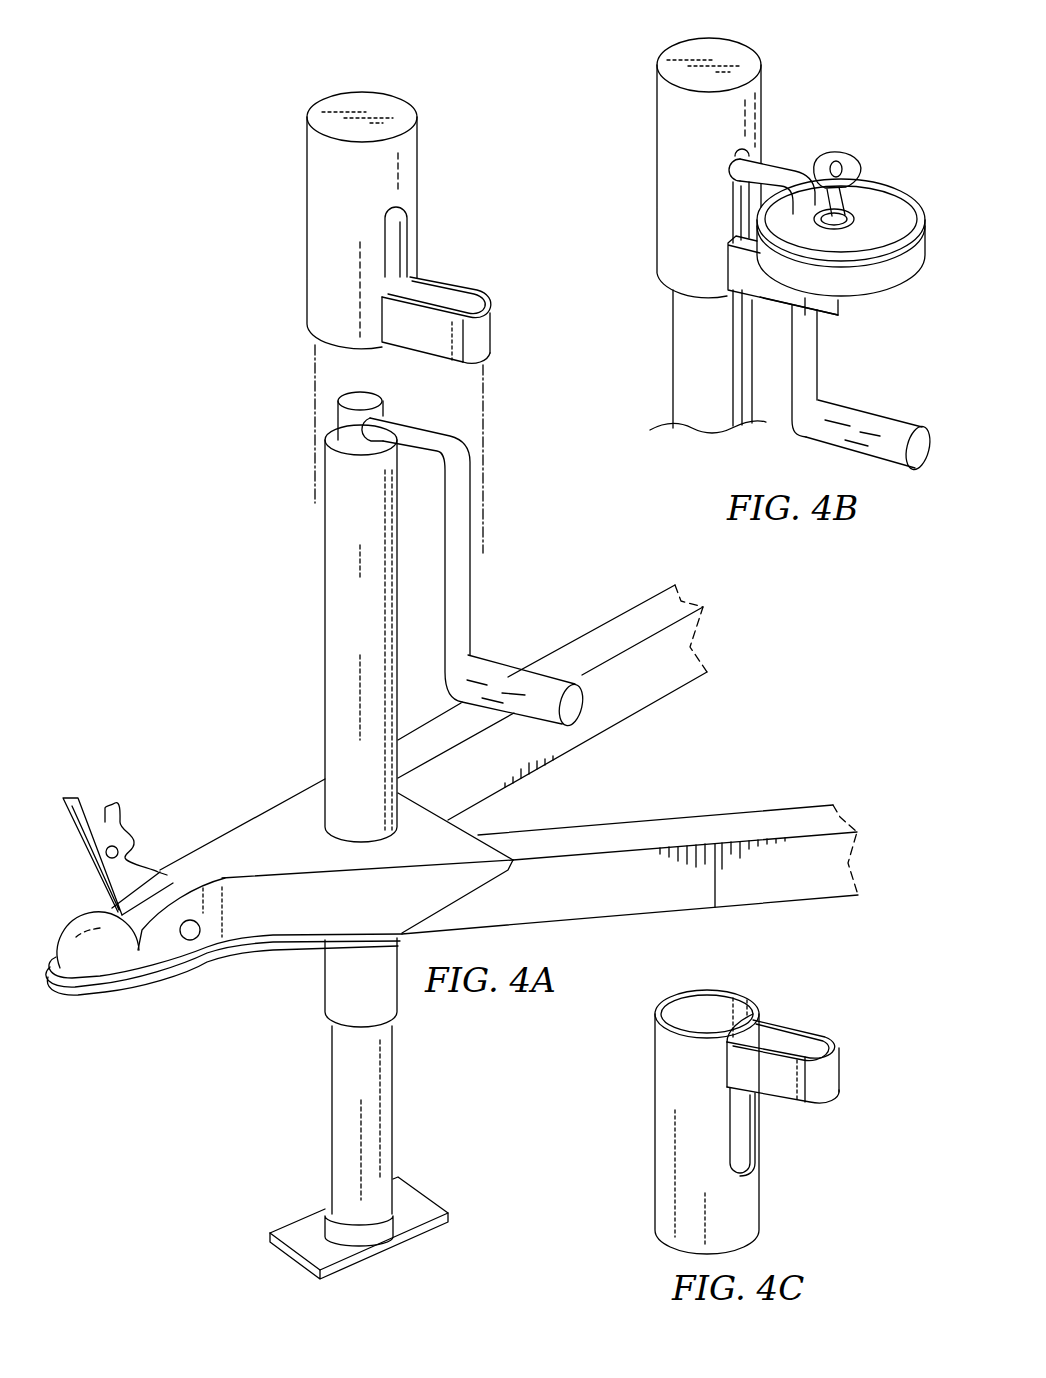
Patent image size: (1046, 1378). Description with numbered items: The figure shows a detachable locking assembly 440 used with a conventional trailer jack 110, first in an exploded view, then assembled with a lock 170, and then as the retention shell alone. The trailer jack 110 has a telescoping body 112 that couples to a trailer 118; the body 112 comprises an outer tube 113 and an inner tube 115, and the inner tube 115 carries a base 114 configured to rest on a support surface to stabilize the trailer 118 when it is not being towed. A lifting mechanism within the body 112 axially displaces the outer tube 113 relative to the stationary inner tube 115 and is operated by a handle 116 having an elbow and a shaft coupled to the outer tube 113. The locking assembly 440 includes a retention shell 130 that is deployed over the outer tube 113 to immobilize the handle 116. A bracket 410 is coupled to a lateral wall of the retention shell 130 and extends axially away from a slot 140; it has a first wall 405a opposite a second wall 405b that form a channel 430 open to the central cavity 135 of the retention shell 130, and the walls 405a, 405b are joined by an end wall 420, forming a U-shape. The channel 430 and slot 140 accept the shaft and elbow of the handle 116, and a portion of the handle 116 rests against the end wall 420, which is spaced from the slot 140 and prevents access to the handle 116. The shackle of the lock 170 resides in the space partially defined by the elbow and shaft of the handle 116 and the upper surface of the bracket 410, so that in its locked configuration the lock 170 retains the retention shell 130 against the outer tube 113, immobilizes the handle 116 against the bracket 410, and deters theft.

In FIG. 4A, the trailer jack 110 is at (384, 812).
In FIG. 4A, the telescoping body 112 is at (288, 710).
In FIG. 4A, the outer tube 113 is at (325, 612).
In FIG. 4B, the outer tube 113 is at (672, 340).
In FIG. 4A, the base 114 is at (298, 1222).
In FIG. 4A, the inner tube 115 is at (332, 1063).
In FIG. 4A, the handle 116 is at (470, 590).
In FIG. 4B, the handle 116 is at (818, 372).
In FIG. 4A, the trailer 118 is at (168, 945).
In FIG. 4A, the retention shell 130 is at (392, 105).
In FIG. 4B, the retention shell 130 is at (728, 55).
In FIG. 4C, the retention shell 130 is at (655, 1140).
In FIG. 4C, the central cavity 135 is at (692, 1010).
In FIG. 4A, the slot 140 is at (395, 232).
In FIG. 4B, the slot 140 is at (741, 196).
In FIG. 4C, the slot 140 is at (737, 1135).
In FIG. 4B, the lock 170 is at (878, 205).
In FIG. 4A, the first wall 405a is at (472, 290).
In FIG. 4C, the first wall 405a is at (782, 1027).
In FIG. 4A, the second wall 405b is at (433, 337).
In FIG. 4C, the second wall 405b is at (772, 1100).
In FIG. 4A, the bracket 410 is at (490, 358).
In FIG. 4B, the bracket 410 is at (838, 315).
In FIG. 4C, the bracket 410 is at (825, 1105).
In FIG. 4A, the end wall 420 is at (478, 335).
In FIG. 4B, the end wall 420 is at (783, 275).
In FIG. 4C, the end wall 420 is at (828, 1072).
In FIG. 4A, the channel 430 is at (432, 297).
In FIG. 4C, the channel 430 is at (797, 1043).
In FIG. 4B, the locking assembly 440 is at (810, 133).